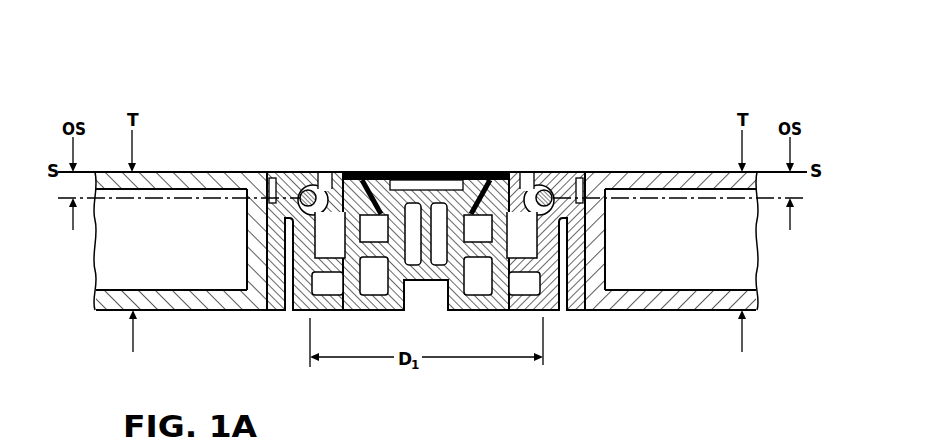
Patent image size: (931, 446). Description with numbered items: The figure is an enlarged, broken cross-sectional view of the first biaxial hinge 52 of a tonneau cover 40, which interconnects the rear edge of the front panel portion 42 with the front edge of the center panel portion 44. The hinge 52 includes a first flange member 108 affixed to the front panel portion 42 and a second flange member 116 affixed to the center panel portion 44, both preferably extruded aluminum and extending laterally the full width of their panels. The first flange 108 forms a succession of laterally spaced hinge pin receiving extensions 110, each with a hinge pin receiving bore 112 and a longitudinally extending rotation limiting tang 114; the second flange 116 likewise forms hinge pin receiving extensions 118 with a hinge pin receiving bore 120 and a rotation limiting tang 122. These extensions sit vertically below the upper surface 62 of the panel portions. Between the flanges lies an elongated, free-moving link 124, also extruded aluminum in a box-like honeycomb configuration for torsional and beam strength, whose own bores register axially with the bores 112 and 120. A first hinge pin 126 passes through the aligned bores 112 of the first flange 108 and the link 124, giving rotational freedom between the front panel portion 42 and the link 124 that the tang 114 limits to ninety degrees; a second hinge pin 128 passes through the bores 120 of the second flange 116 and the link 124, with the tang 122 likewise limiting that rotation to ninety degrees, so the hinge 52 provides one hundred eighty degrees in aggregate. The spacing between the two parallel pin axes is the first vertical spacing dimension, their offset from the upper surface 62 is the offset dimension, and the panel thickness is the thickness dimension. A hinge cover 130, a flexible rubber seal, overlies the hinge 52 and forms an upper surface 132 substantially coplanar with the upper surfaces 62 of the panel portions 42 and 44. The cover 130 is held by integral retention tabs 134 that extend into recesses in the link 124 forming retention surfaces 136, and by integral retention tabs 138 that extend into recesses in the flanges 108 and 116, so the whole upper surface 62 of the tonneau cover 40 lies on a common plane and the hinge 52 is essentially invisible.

The tonneau cover 40 is at (197, 80).
The front panel portion 42 is at (200, 162).
The center panel portion 44 is at (673, 162).
The first biaxial hinge 52 is at (428, 162).
The upper surface 62 is at (242, 168).
The first flange member 108 is at (277, 312).
The hinge pin receiving extension 110 is at (288, 172).
The hinge pin receiving bore 112 is at (304, 180).
The rotation limiting tang 114 is at (336, 176).
The second flange member 116 is at (573, 312).
The hinge pin receiving extension 118 is at (566, 176).
The hinge pin receiving bore 120 is at (555, 172).
The rotation limiting tang 122 is at (518, 176).
The link 124 is at (431, 282).
The first hinge pin 126 is at (315, 172).
The second hinge pin 128 is at (544, 188).
The hinge cover 130 is at (408, 172).
The upper surface 132 is at (467, 172).
The retention tab 134 is at (375, 292).
The retention surface 136 is at (362, 220).
The retention tab 138 is at (300, 200).